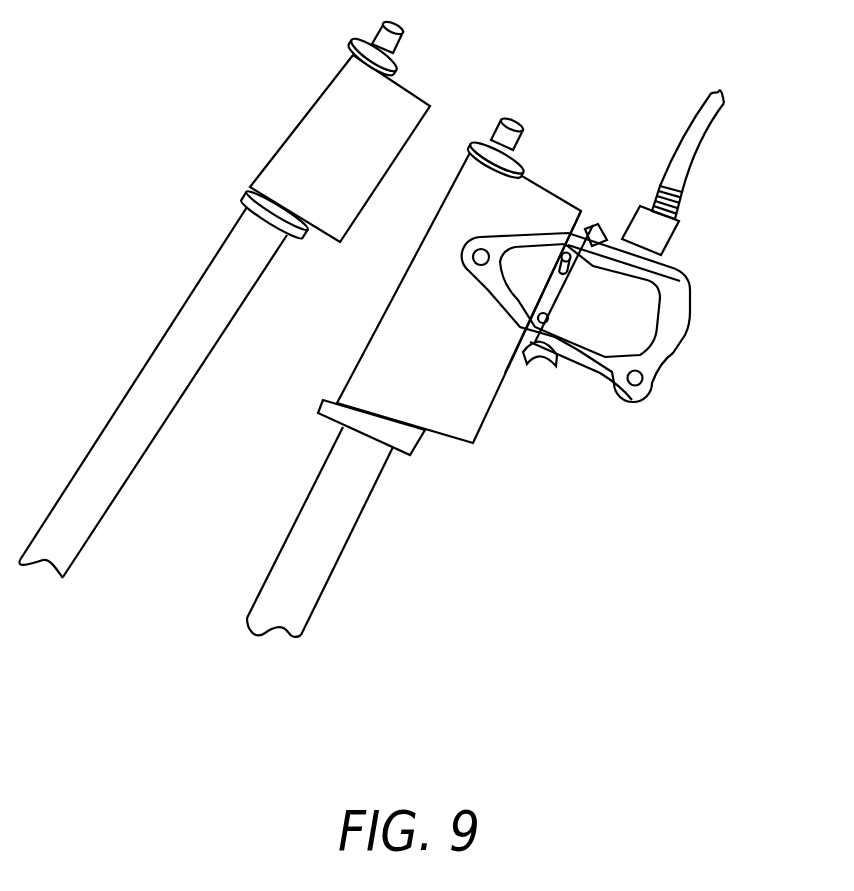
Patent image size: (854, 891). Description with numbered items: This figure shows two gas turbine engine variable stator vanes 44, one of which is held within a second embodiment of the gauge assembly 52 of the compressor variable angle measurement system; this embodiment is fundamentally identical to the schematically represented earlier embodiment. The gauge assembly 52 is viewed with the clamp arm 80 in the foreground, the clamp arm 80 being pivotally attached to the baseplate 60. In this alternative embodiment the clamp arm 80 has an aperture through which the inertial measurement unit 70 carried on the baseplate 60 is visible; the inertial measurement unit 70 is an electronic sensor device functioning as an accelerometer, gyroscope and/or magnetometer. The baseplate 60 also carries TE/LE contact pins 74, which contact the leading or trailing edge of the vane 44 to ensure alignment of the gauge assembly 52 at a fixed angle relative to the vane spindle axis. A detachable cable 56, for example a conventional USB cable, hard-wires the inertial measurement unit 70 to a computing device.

The stator blade 44 is at (327, 112).
The gauge assembly 52 is at (645, 253).
The detachable cable 56 is at (688, 155).
The baseplate 60 is at (636, 413).
The inertial measurement unit 70 is at (637, 308).
The TE/LE contact pin 74 is at (566, 252).
The clamp arm 80 is at (690, 345).